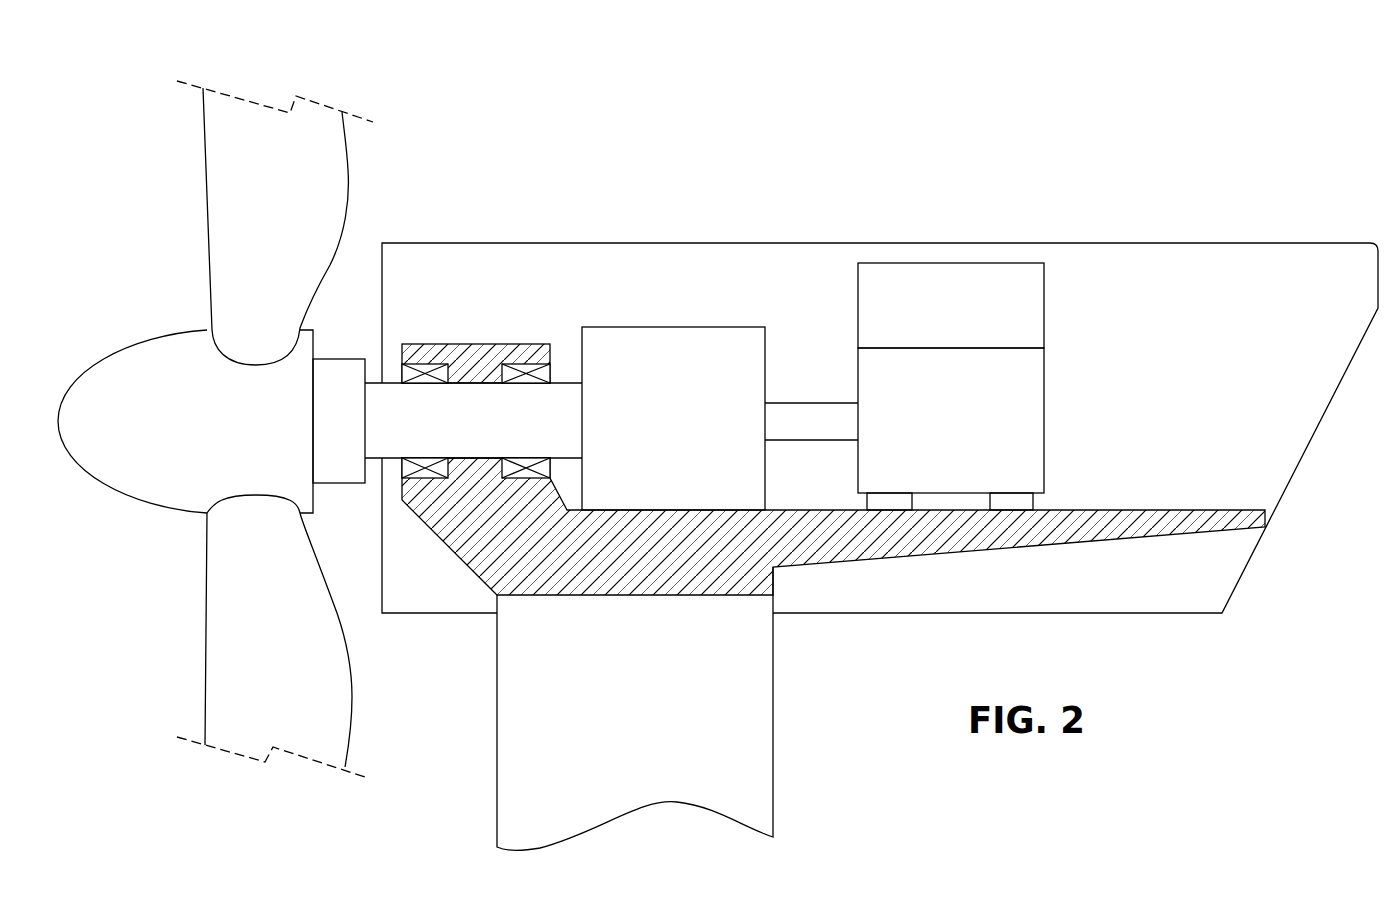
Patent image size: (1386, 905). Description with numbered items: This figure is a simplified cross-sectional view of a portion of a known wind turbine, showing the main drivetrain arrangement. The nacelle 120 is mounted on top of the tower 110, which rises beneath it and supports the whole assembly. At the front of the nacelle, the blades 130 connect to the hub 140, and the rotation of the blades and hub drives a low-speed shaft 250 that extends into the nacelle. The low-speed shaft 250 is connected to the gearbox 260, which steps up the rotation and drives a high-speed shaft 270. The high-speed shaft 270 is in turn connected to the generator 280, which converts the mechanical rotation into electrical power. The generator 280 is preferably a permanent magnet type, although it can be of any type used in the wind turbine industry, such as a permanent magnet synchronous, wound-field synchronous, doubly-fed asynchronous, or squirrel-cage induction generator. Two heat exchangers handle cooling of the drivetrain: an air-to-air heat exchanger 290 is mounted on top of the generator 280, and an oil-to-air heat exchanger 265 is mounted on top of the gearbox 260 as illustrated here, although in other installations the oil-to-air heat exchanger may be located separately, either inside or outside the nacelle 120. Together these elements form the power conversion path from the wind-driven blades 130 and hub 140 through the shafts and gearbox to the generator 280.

The tower 110 is at (655, 722).
The nacelle 120 is at (520, 243).
The blades 130 is at (285, 200).
The hub 140 is at (247, 432).
The low-speed shaft 250 is at (487, 434).
The gearbox 260 is at (699, 431).
The oil-to-air heat exchanger 265 is at (673, 400).
The high-speed shaft 270 is at (826, 403).
The generator 280 is at (975, 434).
The air-to-air heat exchanger 290 is at (975, 322).